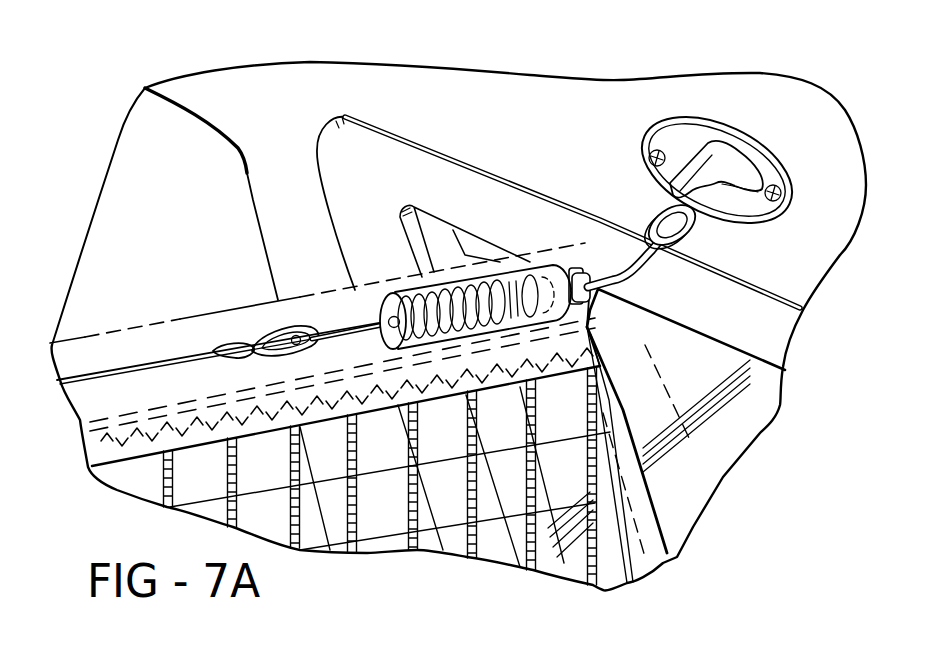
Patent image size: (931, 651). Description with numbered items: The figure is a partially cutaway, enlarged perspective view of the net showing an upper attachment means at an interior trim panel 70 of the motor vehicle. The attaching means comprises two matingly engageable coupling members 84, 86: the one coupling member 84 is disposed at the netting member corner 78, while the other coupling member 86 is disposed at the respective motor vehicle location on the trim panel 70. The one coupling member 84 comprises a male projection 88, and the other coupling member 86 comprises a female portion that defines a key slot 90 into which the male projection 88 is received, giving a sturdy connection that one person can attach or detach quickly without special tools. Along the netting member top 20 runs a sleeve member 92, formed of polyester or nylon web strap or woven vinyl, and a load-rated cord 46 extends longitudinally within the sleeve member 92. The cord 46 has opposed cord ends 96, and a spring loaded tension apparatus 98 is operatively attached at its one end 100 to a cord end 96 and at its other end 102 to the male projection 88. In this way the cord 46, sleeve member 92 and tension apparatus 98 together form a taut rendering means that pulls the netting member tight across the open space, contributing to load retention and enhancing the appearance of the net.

The interior trim panel 70 is at (813, 137).
The sleeve member 92 is at (83, 335).
The netting member top 20 is at (293, 297).
The load-rated cord 46 is at (140, 367).
The cord end 96 is at (257, 333).
The tension apparatus end 100 is at (355, 290).
The spring loaded tension apparatus 98 is at (513, 263).
The male projection 88 is at (612, 260).
The tension apparatus other end 102 is at (581, 296).
The coupling member 86 is at (748, 126).
The key slot 90 is at (752, 188).
The coupling member 84 is at (659, 273).
The netting member corner 78 is at (588, 327).